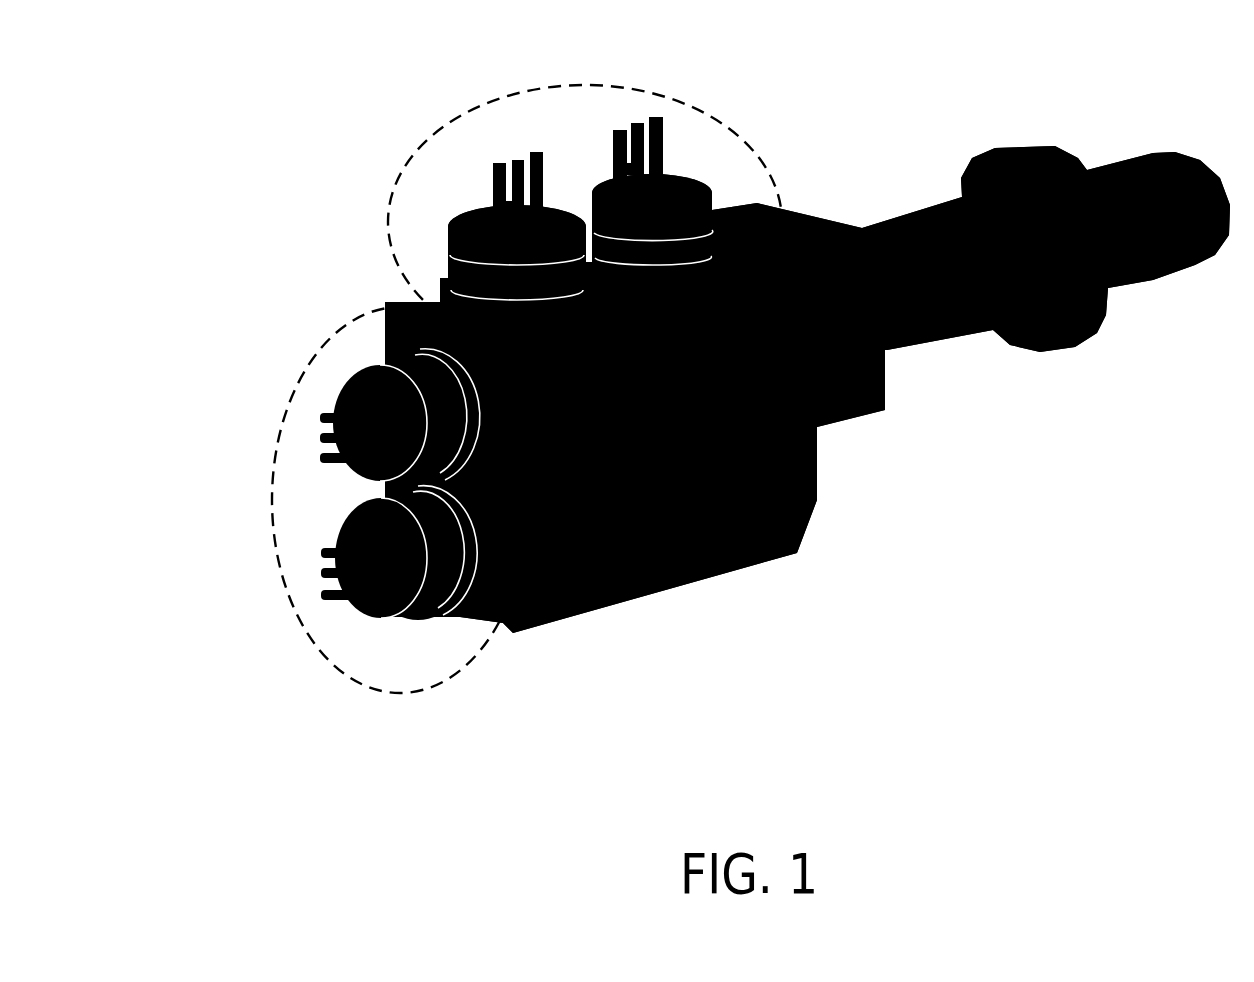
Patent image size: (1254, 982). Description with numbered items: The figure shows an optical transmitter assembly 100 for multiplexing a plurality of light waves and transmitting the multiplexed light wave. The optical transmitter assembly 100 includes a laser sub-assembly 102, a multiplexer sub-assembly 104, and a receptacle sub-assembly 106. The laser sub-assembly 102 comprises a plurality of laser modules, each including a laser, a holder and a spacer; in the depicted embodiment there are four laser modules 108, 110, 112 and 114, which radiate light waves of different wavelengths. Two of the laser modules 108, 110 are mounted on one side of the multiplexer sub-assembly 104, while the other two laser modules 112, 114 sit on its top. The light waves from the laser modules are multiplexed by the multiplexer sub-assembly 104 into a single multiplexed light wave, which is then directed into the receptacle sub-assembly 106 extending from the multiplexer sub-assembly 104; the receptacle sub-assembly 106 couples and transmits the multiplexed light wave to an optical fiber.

The optical transmitter assembly 100 is at (275, 673).
The laser sub-assembly 102 is at (403, 170).
The multiplexer sub-assembly 104 is at (750, 568).
The receptacle sub-assembly 106 is at (957, 200).
The laser module 108 is at (337, 513).
The laser module 110 is at (377, 371).
The laser module 112 is at (463, 220).
The laser module 114 is at (593, 180).